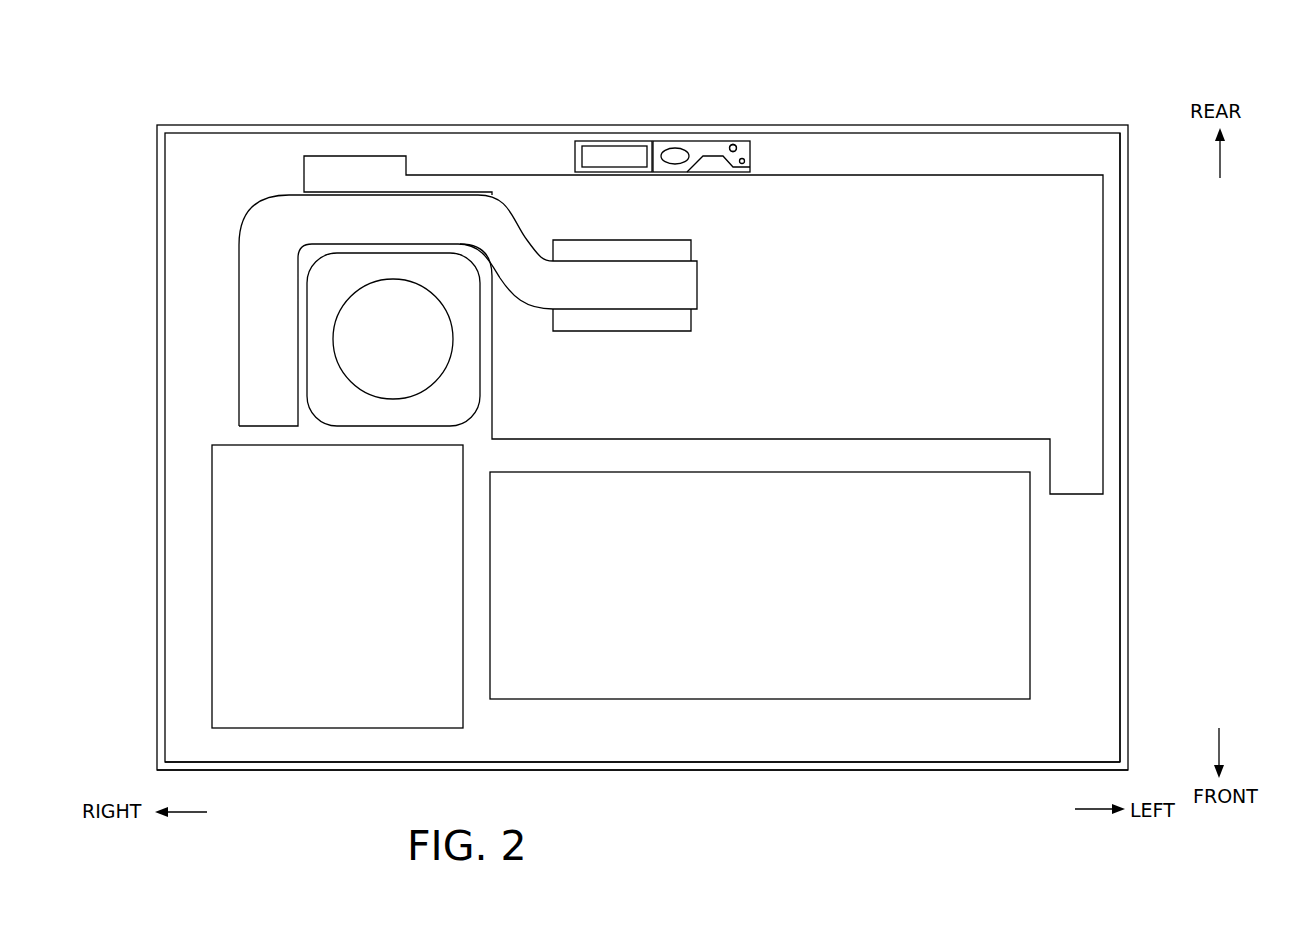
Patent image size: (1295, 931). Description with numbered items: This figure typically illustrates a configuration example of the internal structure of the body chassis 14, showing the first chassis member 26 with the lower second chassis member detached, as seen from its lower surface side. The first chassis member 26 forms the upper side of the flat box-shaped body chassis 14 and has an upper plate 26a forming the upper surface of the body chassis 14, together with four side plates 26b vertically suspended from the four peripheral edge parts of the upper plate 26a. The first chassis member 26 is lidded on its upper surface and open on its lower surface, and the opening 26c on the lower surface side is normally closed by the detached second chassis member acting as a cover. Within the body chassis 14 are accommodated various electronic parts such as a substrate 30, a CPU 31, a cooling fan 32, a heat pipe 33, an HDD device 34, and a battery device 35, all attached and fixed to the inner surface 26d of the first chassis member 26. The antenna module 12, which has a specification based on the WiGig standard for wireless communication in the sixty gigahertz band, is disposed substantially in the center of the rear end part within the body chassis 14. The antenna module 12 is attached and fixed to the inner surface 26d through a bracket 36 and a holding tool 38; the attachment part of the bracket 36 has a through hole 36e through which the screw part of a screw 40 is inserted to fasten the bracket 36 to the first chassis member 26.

The body chassis 14 is at (142, 81).
The antenna module 12 is at (617, 150).
The first chassis member 26 is at (910, 117).
The upper plate 26a is at (838, 736).
The side plates 26b is at (1022, 128).
The opening 26c is at (703, 765).
The inner surface 26d is at (1093, 617).
The substrate 30 is at (1053, 325).
The CPU 31 is at (638, 240).
The cooling fan 32 is at (439, 352).
The heat pipe 33 is at (251, 350).
The HDD device 34 is at (336, 703).
The battery device 35 is at (578, 683).
The bracket 36 is at (697, 150).
The through hole 36e is at (735, 145).
The holding tool 38 is at (575, 150).
The screw 40 is at (742, 103).